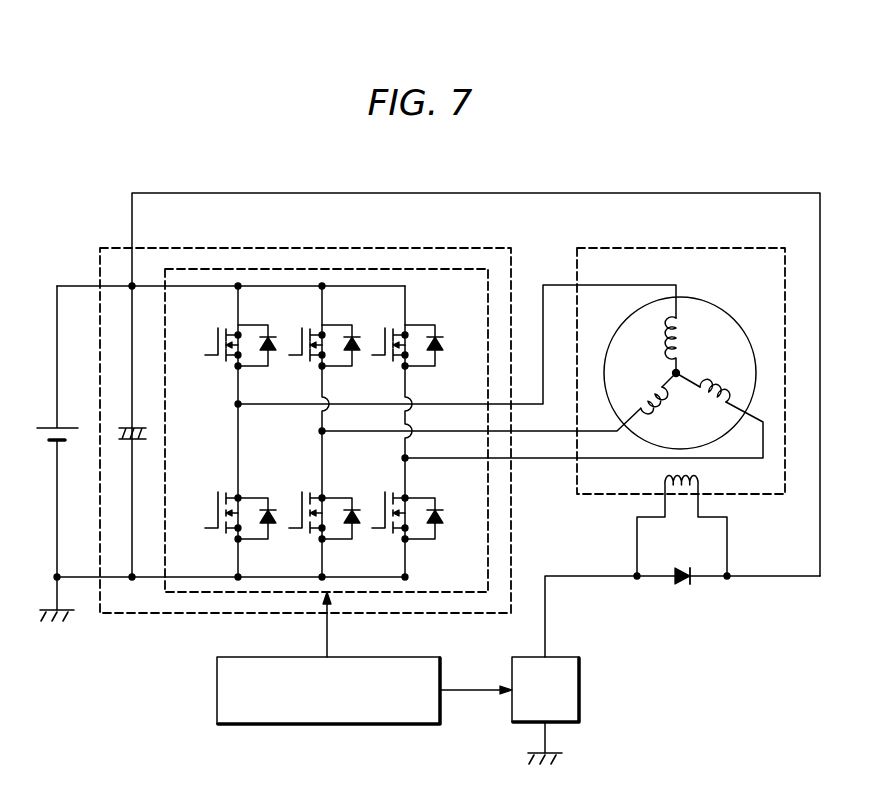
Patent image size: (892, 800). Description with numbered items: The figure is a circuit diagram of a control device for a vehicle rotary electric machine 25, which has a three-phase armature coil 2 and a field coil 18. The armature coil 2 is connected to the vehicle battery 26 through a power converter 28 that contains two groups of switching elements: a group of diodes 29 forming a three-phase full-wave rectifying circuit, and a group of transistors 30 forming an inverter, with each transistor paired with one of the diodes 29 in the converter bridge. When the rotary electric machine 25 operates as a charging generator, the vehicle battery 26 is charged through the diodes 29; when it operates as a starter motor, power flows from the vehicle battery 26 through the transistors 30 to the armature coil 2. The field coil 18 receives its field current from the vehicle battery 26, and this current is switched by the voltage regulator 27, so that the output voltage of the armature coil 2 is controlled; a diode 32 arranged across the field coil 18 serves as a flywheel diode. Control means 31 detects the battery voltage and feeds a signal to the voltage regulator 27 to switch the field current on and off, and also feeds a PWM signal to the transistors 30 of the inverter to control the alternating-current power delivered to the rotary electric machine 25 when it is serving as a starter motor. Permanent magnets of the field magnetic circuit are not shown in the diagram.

The three-phase armature coil 2 is at (706, 307).
The field coil 18 is at (701, 477).
The rotary electric machine 25 is at (685, 247).
The vehicle battery 26 is at (48, 427).
The voltage regulator 27 is at (581, 690).
The power converter 28 is at (330, 247).
The diodes 29 is at (461, 542).
The transistors 30 is at (387, 504).
The control means 31 is at (217, 692).
The diode 32 is at (682, 582).